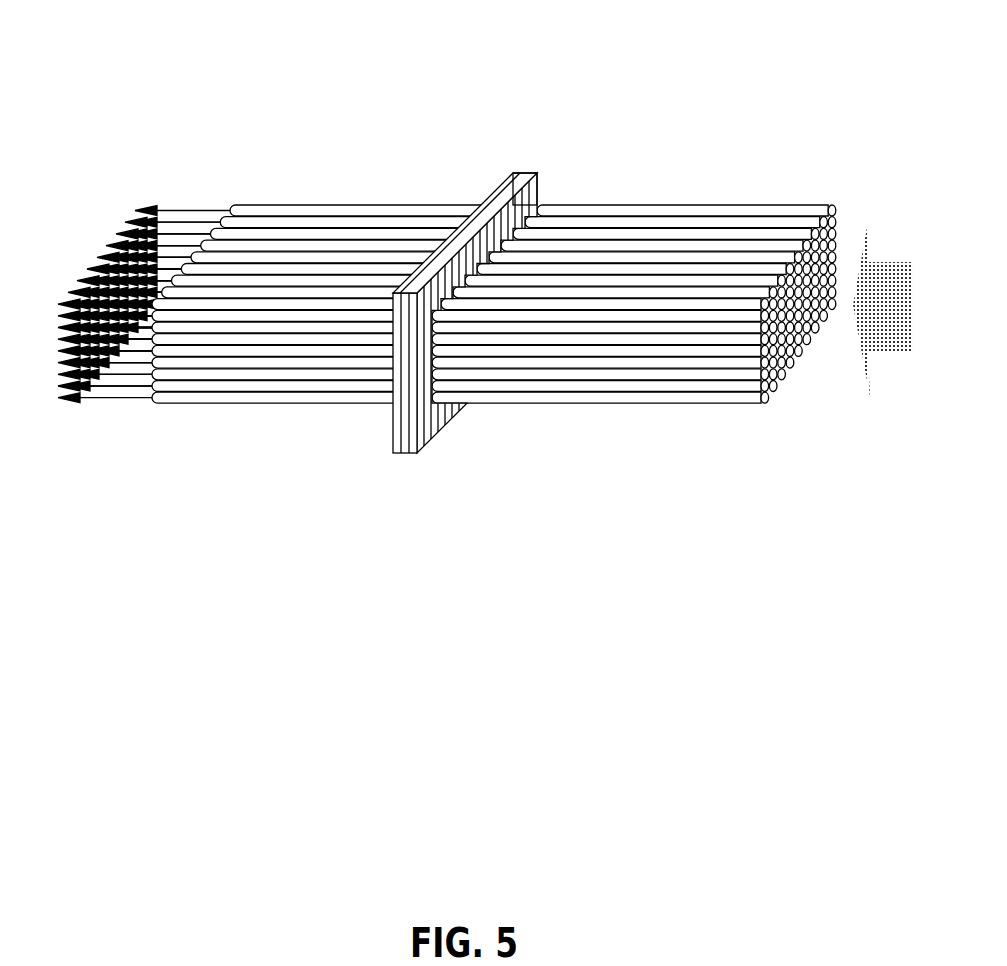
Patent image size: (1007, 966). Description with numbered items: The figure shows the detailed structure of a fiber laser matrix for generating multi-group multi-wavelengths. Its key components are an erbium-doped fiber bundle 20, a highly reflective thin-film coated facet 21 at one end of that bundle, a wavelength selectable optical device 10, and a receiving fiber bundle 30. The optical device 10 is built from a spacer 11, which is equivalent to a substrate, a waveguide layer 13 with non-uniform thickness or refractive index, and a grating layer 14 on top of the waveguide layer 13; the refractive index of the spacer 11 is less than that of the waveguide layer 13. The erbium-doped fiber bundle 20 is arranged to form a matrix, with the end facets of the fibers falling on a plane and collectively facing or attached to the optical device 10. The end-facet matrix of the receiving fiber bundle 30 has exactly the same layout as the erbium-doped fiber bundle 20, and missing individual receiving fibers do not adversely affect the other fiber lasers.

The wavelength selectable optical device 10 is at (419, 527).
The spacer 11 is at (492, 160).
The waveguide layer 13 is at (546, 144).
The grating layer 14 is at (564, 176).
The erbium-doped fiber bundle 20 is at (611, 379).
The highly reflective thin-film coated facet 21 is at (785, 364).
The receiving fiber bundle 30 is at (239, 379).